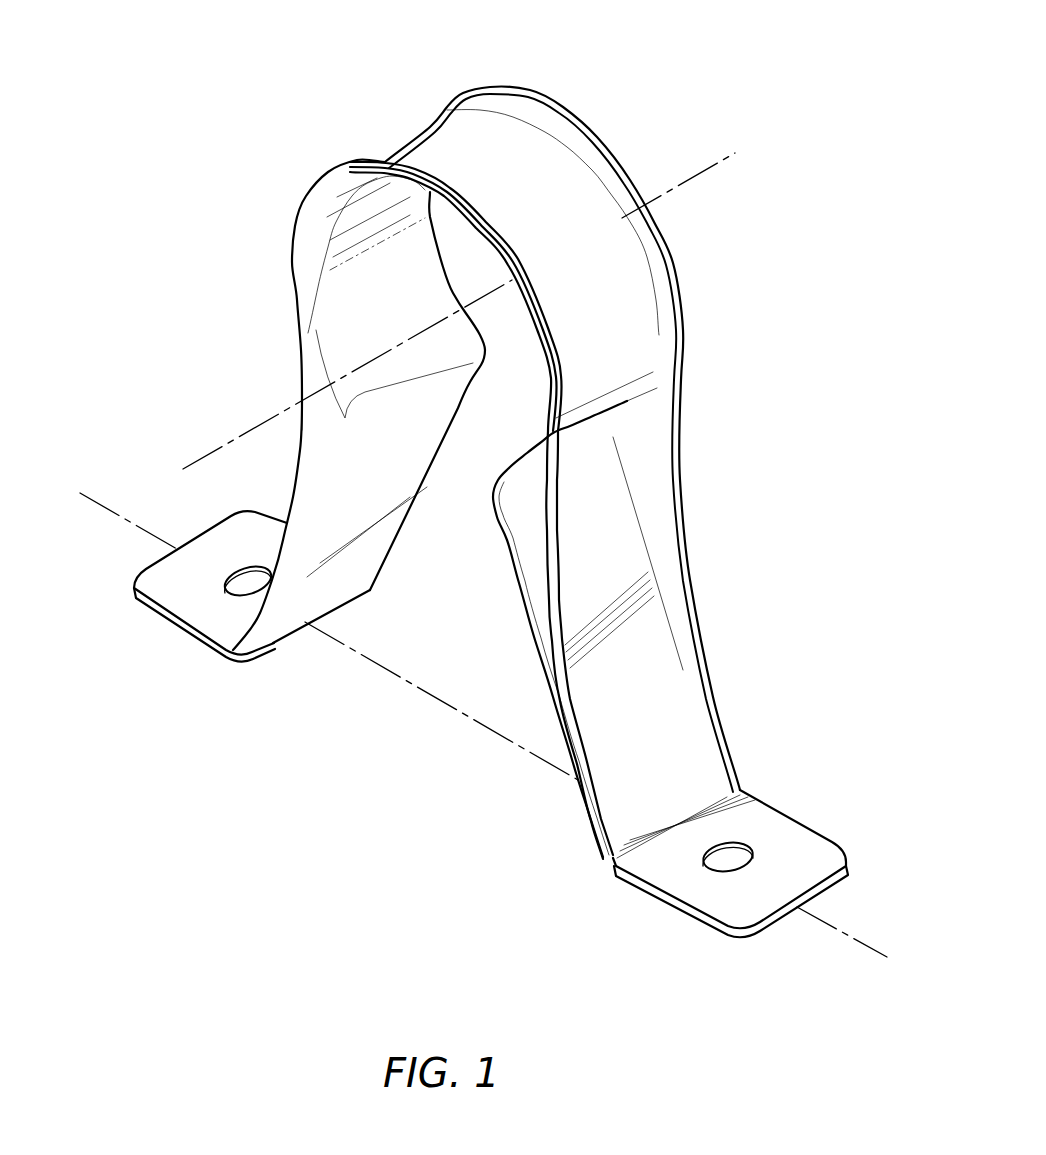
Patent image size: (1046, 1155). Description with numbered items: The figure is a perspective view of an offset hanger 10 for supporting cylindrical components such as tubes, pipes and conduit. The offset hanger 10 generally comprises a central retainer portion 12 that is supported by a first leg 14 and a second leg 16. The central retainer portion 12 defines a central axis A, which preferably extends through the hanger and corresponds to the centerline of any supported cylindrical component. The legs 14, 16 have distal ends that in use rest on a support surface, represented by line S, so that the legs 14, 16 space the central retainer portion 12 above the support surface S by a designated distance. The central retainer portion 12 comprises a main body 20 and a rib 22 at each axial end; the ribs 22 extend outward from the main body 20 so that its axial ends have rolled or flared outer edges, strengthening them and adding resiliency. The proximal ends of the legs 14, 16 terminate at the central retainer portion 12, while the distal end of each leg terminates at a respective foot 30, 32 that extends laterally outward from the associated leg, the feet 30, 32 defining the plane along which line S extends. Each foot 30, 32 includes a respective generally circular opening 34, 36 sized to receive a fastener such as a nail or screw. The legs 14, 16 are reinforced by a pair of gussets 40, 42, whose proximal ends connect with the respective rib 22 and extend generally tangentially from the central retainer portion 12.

The offset hanger 10 is at (773, 160).
The central retainer portion 12 is at (357, 250).
The first leg 14 is at (335, 582).
The second leg 16 is at (633, 710).
The main body 20 is at (423, 153).
The rib 22 is at (577, 120).
The foot 30 is at (155, 578).
The foot 32 is at (779, 830).
The opening 34 is at (233, 594).
The opening 36 is at (713, 867).
The gusset 40 is at (312, 373).
The gusset 42 is at (656, 440).
The central axis A is at (186, 466).
The line S (support surface) S is at (870, 948).